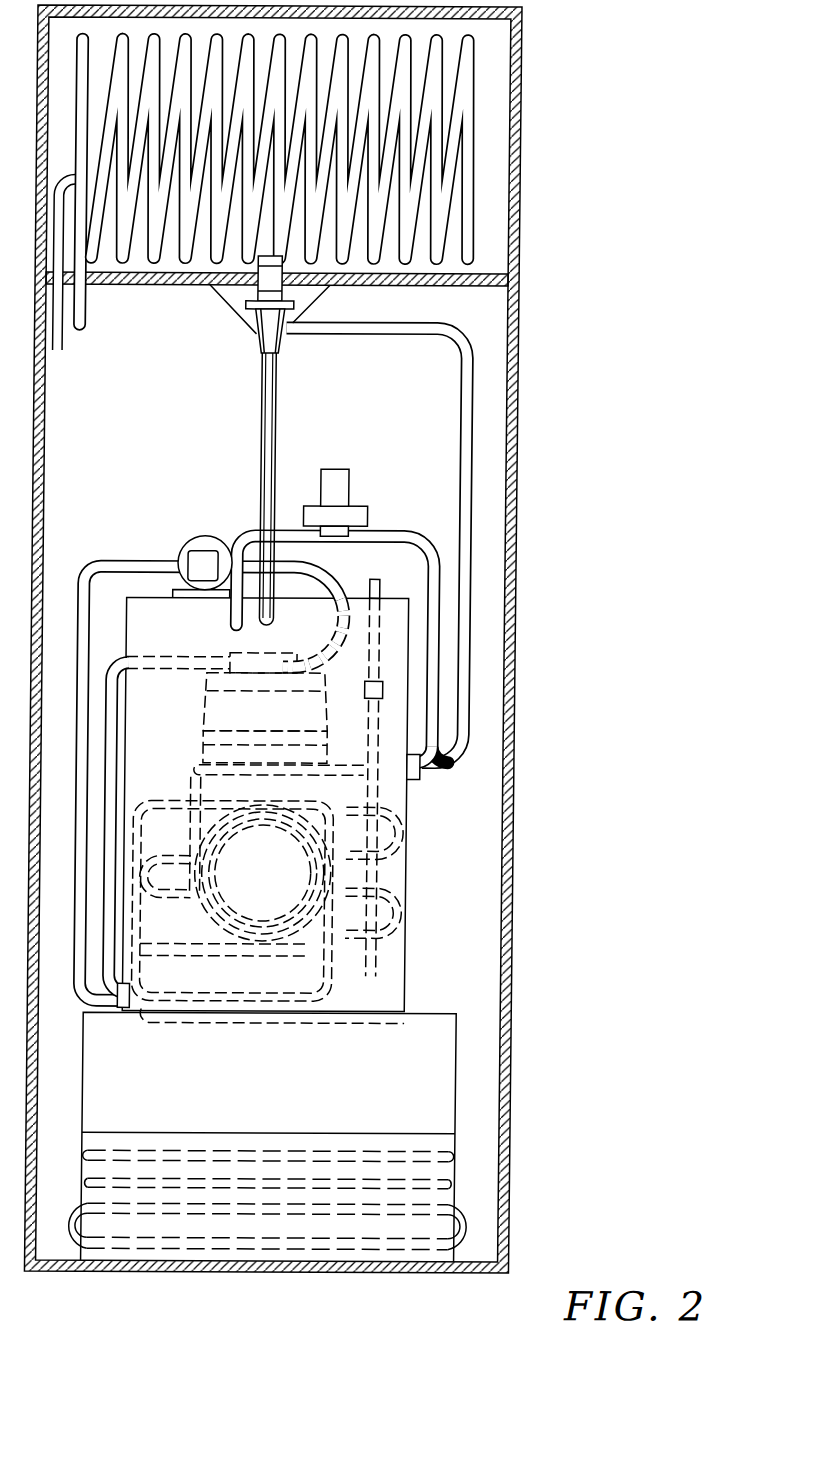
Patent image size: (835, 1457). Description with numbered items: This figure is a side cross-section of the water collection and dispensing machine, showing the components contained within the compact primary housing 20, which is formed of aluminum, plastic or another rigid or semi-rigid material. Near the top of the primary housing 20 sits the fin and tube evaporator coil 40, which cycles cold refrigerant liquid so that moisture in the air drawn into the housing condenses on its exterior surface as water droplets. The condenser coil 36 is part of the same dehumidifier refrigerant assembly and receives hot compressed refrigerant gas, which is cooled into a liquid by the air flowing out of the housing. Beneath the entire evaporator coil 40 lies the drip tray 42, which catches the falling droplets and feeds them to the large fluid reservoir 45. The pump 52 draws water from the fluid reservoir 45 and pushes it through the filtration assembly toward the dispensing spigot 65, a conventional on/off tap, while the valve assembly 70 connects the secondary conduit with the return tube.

The primary housing 20 is at (525, 446).
The condenser coil 36 is at (270, 1222).
The evaporator coil 40 is at (483, 162).
The drip tray 42 is at (322, 280).
The fluid reservoir 45 is at (415, 885).
The pump 52 is at (185, 551).
The dispensing spigot 65 is at (259, 340).
The valve assembly 70 is at (373, 505).